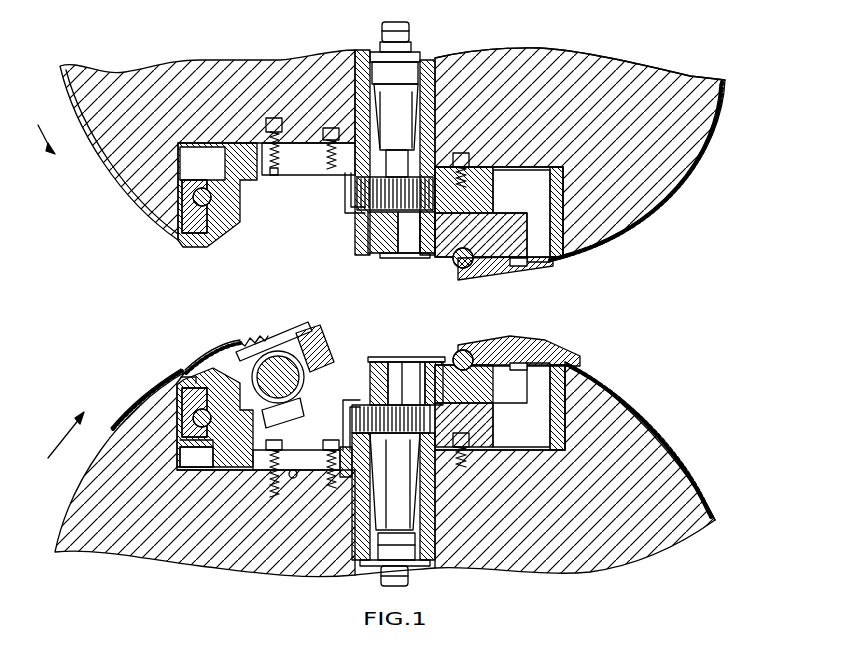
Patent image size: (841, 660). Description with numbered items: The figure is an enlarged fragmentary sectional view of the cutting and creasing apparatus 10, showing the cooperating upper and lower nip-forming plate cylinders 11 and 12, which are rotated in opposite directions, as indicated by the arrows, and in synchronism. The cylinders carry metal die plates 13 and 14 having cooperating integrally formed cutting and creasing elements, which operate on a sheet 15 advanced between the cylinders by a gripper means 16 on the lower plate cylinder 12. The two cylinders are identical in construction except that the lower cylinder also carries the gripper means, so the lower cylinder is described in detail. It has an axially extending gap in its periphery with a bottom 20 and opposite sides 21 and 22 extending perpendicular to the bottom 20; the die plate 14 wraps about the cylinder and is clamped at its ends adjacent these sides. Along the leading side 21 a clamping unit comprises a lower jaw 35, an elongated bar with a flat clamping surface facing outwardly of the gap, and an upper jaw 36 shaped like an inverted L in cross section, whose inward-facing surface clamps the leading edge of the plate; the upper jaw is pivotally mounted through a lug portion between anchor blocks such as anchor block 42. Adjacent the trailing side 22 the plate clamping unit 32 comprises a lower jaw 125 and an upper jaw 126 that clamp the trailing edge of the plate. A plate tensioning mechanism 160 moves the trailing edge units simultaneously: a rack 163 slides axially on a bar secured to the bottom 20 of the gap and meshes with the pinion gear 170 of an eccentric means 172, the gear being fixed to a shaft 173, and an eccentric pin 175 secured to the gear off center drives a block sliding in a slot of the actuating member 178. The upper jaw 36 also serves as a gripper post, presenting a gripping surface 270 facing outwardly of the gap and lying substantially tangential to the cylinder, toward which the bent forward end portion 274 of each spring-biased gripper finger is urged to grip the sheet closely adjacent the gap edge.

The cutting and creasing apparatus 10 is at (684, 67).
The upper plate cylinder 11 is at (674, 74).
The lower plate cylinder 12 is at (672, 527).
The metal die plate 13 is at (690, 150).
The metal die plate 14 is at (698, 503).
The sheet 15 is at (150, 395).
The gripper means 16 is at (307, 327).
The bottom 20 is at (297, 478).
The side 21 is at (180, 458).
The side 22 is at (540, 450).
The plate clamping unit 32 is at (591, 357).
The lower jaw 35 is at (178, 432).
The upper jaw 36 is at (226, 470).
The anchor block 42 is at (196, 470).
The lower jaw 125 is at (582, 366).
The upper jaw 126 is at (495, 345).
The plate tensioning mechanism 160 is at (434, 350).
The rack 163 is at (468, 450).
The pinion gear 170 is at (412, 446).
The eccentric means 172 is at (352, 400).
The shaft 173 is at (400, 500).
The eccentric pin 175 is at (409, 364).
The actuating member 178 is at (372, 362).
The gripping surface 270 is at (183, 377).
The forward end portion 274 is at (186, 370).